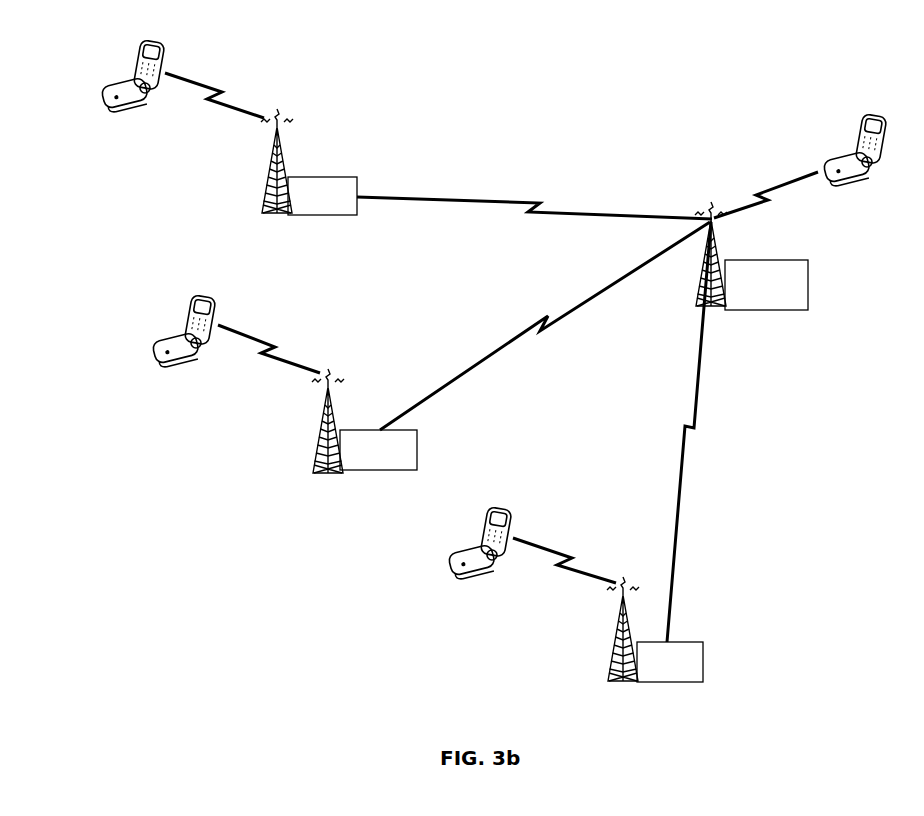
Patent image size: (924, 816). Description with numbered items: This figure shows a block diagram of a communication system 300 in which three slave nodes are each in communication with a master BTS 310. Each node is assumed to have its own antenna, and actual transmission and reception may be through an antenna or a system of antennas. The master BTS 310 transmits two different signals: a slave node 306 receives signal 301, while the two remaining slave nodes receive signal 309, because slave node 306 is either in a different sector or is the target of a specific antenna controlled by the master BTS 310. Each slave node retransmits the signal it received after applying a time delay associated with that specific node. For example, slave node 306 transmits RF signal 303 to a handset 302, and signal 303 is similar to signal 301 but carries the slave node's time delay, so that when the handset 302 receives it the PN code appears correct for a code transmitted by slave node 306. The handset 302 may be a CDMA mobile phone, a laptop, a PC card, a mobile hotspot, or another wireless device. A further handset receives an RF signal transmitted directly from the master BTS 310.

The communication system 300 is at (125, 626).
The signal 301 is at (530, 214).
The handset 302 is at (97, 92).
The RF signal 303 is at (220, 85).
The slave node 306 is at (320, 217).
The signal 309 is at (543, 328).
The master BTS 310 is at (748, 311).